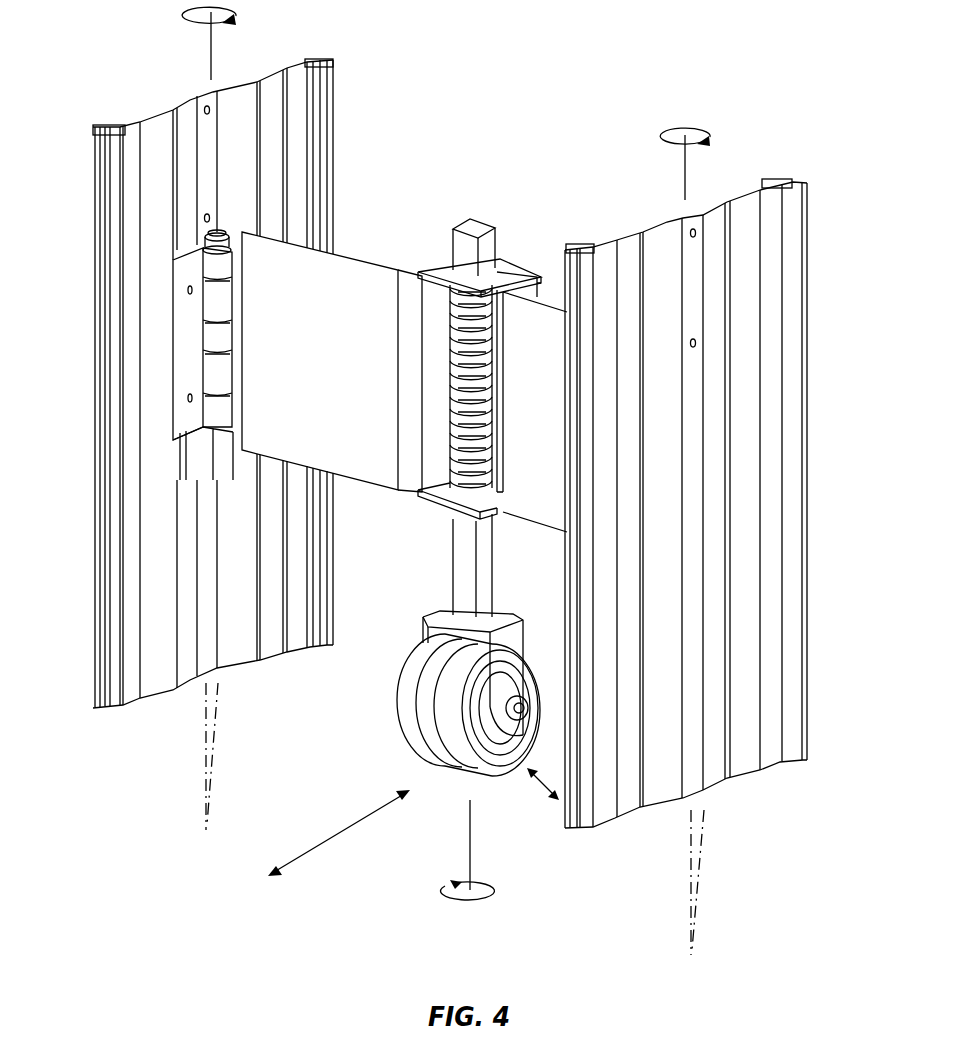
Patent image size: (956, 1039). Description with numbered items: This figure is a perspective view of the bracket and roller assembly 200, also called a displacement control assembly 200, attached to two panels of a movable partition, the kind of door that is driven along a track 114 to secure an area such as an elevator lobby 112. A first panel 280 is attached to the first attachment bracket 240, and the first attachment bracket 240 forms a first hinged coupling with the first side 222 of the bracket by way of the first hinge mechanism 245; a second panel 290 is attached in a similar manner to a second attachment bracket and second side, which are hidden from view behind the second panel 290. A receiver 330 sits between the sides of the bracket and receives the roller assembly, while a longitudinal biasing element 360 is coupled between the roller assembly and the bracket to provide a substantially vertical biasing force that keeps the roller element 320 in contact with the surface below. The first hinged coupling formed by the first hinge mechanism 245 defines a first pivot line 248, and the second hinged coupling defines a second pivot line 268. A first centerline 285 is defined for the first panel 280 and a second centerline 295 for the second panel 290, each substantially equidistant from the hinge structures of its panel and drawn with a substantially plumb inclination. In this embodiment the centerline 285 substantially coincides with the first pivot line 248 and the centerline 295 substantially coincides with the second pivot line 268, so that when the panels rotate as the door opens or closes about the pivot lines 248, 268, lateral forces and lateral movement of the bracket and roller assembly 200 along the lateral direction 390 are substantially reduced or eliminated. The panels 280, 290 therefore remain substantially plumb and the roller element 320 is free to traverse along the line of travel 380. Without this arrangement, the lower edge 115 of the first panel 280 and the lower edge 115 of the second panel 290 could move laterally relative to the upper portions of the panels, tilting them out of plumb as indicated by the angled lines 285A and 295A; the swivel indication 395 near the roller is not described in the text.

The elevator lobby 112 is at (248, 383).
The track 114 is at (661, 472).
The lower edge 115 is at (287, 652).
The bracket and roller assembly 200 is at (407, 532).
The first side 222 is at (347, 255).
The first attachment bracket 240 is at (280, 321).
The first hinge mechanism 245 is at (223, 233).
The first pivot line 248 is at (210, 62).
The second pivot line 268 is at (685, 182).
The first panel 280 is at (293, 575).
The first centerline 285 is at (207, 723).
The angled line 285A is at (217, 723).
The second panel 290 is at (602, 578).
The second centerline 295 is at (692, 852).
The angled line 295A is at (703, 852).
The roller element 320 is at (407, 732).
The receiver 330 is at (423, 503).
The longitudinal biasing element 360 is at (445, 455).
The line of travel 380 is at (337, 833).
The lateral direction 390 is at (532, 778).
The caster swivel axis 395 is at (472, 863).